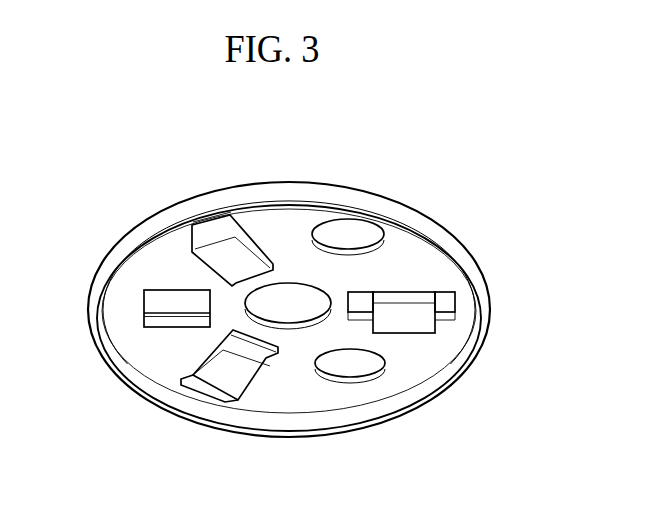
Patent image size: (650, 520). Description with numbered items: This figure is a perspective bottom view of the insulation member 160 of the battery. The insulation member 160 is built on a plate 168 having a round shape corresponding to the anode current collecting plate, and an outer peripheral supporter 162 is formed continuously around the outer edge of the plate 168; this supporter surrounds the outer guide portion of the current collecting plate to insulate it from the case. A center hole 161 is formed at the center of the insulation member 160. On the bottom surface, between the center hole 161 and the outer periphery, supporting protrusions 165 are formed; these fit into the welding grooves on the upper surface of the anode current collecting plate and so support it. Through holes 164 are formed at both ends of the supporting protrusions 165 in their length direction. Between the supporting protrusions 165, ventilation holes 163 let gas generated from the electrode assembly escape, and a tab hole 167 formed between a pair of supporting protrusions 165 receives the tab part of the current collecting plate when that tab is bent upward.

The insulation member 160 is at (492, 277).
The center hole 161 is at (287, 298).
The outer peripheral supporter 162 is at (147, 388).
The ventilation hole 163 is at (378, 250).
The through hole 164 is at (450, 300).
The supporting protrusion 165 is at (417, 325).
The tab hole 167 is at (170, 289).
The plate 168 is at (102, 331).